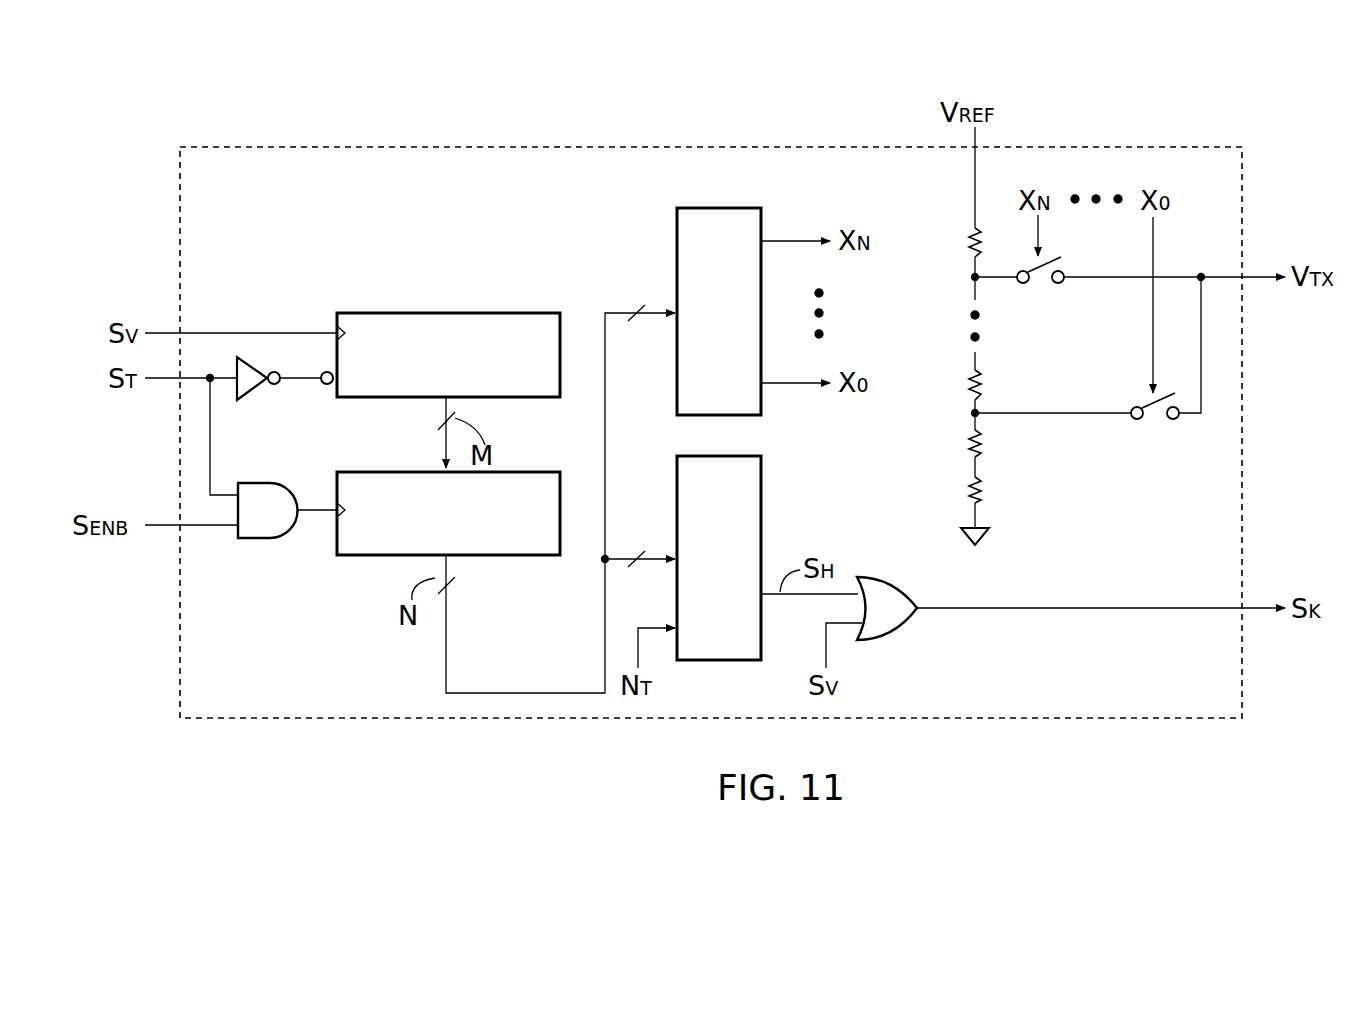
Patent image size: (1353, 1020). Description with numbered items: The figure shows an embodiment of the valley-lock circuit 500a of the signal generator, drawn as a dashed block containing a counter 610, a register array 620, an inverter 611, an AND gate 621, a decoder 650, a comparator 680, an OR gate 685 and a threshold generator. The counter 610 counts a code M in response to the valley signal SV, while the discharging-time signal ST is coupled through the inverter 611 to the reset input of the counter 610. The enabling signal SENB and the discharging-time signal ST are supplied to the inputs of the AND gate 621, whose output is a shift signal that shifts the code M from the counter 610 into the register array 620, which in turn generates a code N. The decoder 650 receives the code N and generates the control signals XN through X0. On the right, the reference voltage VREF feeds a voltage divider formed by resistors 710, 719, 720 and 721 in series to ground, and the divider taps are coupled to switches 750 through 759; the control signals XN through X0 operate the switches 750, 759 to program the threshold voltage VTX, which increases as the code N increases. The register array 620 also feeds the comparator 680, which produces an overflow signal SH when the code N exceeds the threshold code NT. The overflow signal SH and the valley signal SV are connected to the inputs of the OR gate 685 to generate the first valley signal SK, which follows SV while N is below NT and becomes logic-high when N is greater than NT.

The valley-lock circuit 500a is at (232, 147).
The counter 610 is at (440, 313).
The inverter 611 is at (250, 395).
The register array 620 is at (495, 557).
The AND gate 621 is at (268, 545).
The decoder 650 is at (713, 207).
The comparator 680 is at (761, 478).
The OR gate 685 is at (892, 640).
The resistor 710 is at (957, 240).
The resistor 719 is at (960, 385).
The resistor 720 is at (985, 447).
The resistor 721 is at (960, 492).
The switch 750 is at (1040, 283).
The switch 759 is at (1155, 425).